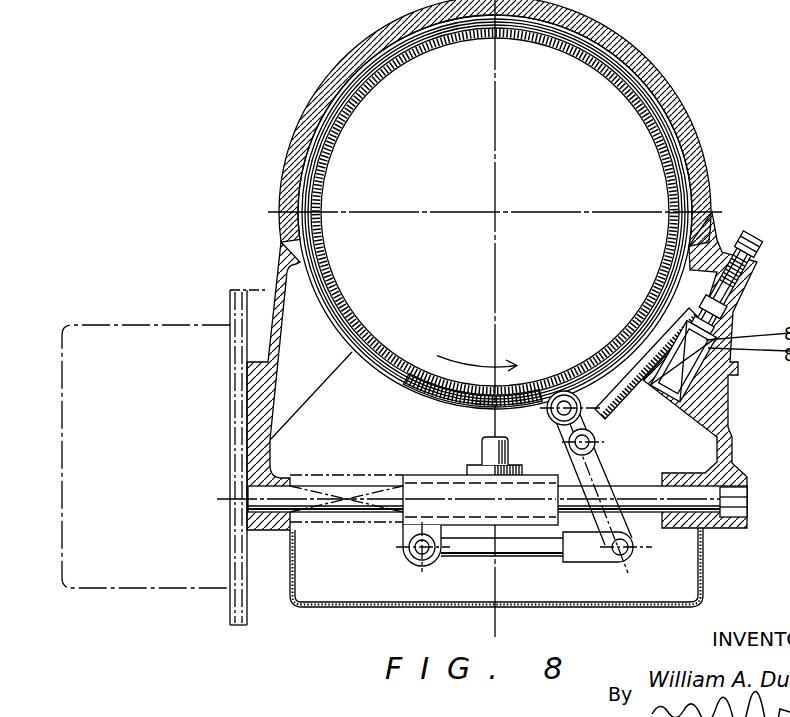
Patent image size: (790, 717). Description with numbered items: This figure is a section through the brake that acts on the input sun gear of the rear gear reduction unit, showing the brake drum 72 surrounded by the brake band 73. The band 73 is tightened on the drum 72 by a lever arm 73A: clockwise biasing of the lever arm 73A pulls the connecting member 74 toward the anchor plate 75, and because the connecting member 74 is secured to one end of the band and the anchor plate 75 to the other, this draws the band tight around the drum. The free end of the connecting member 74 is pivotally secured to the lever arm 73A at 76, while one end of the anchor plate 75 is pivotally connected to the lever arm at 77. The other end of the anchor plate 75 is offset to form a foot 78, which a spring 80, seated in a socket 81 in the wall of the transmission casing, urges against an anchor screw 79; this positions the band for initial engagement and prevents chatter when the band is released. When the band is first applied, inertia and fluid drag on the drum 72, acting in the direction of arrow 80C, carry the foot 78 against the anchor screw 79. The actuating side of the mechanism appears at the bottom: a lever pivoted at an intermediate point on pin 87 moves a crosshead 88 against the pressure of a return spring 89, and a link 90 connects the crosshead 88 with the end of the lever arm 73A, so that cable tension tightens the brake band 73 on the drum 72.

The brake drum 72 is at (641, 112).
The brake band 73 is at (687, 158).
The lever arm 73A is at (600, 458).
The connecting member 74 is at (475, 417).
The anchor plate 75 is at (615, 402).
The pivot of connecting member 76 is at (575, 397).
The pivot of anchor plate 77 is at (562, 445).
The foot 78 is at (706, 329).
The anchor screw 79 is at (733, 290).
The spring 80 is at (730, 373).
The arrow 80C is at (460, 362).
The socket 81 is at (710, 393).
The pin 87 is at (481, 452).
The crosshead 88 is at (426, 474).
The return spring 89 is at (337, 483).
The link 90 is at (513, 553).